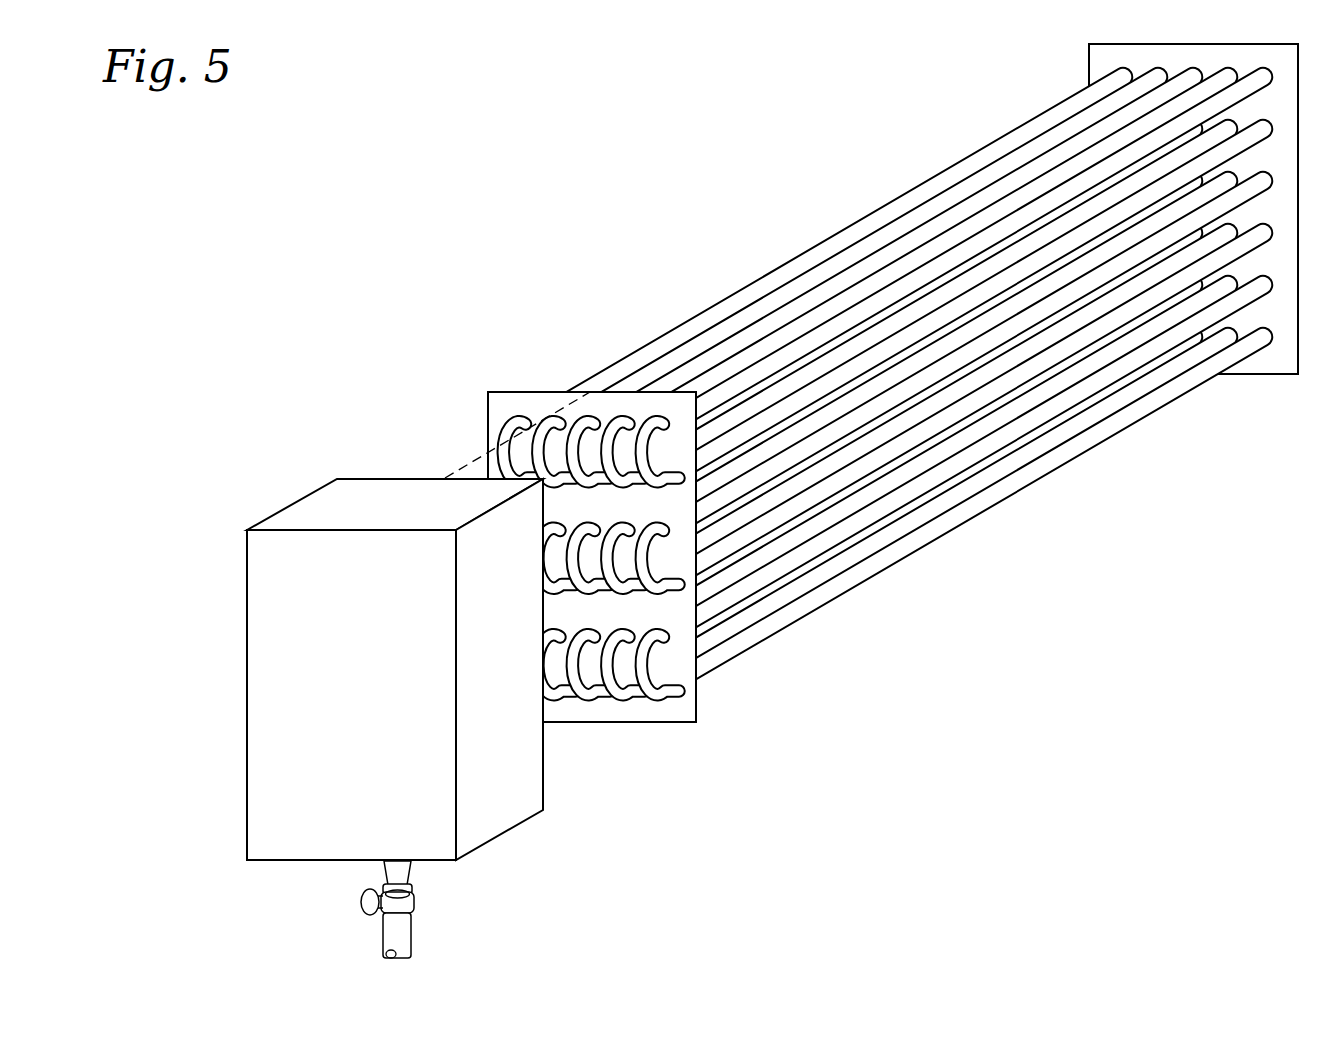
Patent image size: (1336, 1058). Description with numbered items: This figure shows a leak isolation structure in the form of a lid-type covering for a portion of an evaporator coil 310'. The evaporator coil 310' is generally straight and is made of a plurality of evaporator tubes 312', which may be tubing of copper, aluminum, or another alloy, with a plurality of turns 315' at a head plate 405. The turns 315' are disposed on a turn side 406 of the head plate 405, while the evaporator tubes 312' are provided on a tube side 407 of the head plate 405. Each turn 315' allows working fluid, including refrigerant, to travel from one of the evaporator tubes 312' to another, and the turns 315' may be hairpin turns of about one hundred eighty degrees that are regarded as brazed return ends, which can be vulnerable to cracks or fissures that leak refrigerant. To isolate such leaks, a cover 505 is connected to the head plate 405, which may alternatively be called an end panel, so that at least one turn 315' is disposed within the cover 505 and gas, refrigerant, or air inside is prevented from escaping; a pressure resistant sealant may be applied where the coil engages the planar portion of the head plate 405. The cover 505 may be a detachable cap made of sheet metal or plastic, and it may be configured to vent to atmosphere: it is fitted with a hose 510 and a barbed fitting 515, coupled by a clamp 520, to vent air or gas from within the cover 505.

The evaporator coil 310' is at (910, 366).
The evaporator tubes 312' is at (963, 382).
The turns 315' is at (660, 607).
The head plate 405 is at (502, 390).
The turn side 406 is at (488, 424).
The tube side 407 is at (844, 418).
The cover 505 is at (327, 508).
The hose 510 is at (410, 933).
The barbed fitting 515 is at (409, 875).
The clamp 520 is at (362, 900).